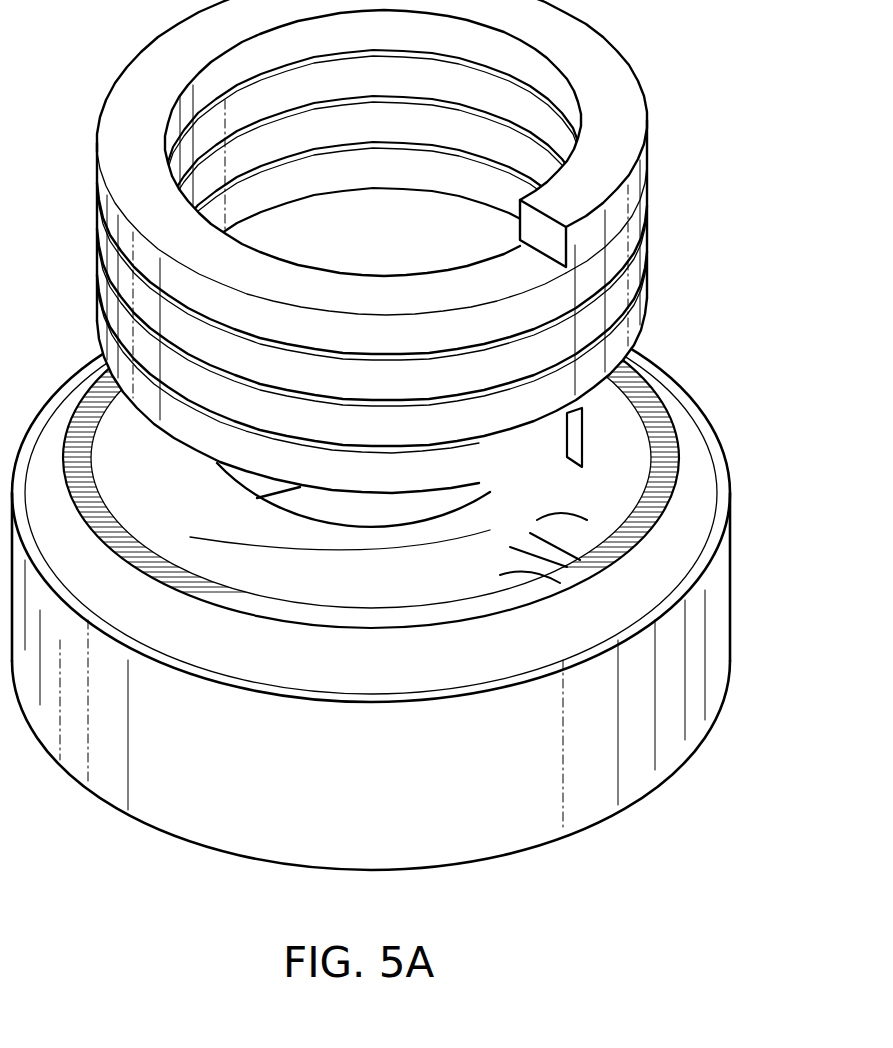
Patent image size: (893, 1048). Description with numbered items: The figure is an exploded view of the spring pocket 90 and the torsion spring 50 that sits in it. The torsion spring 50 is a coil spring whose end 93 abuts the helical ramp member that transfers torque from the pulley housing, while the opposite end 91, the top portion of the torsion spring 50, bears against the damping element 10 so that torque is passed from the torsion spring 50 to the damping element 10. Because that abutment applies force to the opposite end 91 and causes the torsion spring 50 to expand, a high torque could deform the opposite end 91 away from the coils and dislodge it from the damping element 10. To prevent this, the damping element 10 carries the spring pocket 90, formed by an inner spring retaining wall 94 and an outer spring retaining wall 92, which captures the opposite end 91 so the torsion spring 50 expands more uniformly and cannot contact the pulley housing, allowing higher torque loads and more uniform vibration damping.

The damping element 10 is at (595, 786).
The torsion spring 50 is at (433, 246).
The spring pocket 90 is at (620, 530).
The opposite end 91 is at (556, 440).
The outer spring retaining wall 92 is at (502, 602).
The end 93 is at (520, 243).
The inner spring retaining wall 94 is at (345, 537).